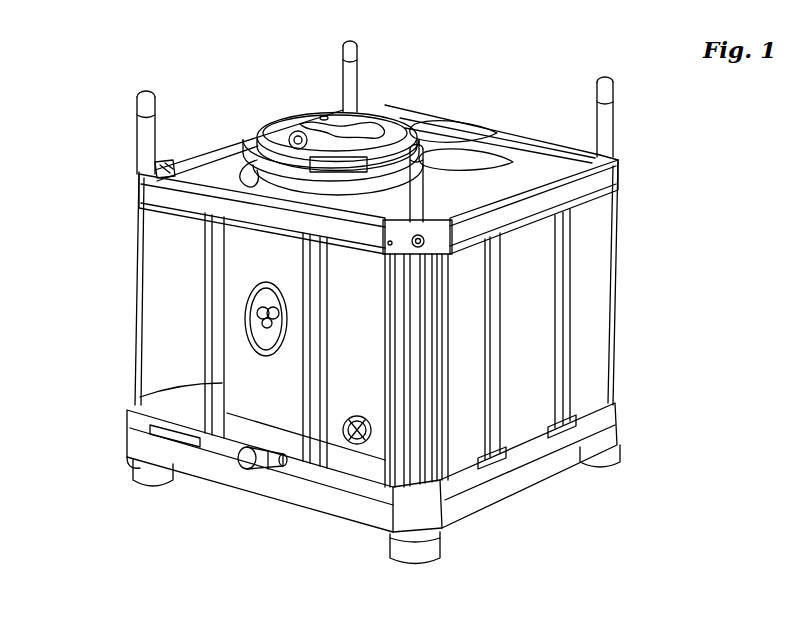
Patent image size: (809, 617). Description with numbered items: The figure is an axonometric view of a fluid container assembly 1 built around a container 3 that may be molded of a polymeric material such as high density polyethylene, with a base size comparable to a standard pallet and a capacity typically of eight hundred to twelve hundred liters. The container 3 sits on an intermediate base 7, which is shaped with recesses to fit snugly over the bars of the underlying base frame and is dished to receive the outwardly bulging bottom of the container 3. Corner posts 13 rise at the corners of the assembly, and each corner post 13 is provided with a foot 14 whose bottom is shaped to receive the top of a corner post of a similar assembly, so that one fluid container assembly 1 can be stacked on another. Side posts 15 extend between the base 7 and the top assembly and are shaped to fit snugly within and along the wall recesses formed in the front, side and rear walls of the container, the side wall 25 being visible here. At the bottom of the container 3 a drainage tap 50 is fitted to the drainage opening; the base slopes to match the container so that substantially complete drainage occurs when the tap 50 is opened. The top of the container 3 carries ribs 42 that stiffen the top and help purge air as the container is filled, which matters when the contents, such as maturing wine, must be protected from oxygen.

The fluid container assembly 1 is at (620, 268).
The container 3 is at (137, 305).
The intermediate base 7 is at (610, 418).
The corner post 13 is at (608, 130).
The foot 14 is at (430, 548).
The side post 15 is at (137, 390).
The side wall 25 is at (513, 422).
The rib 42 is at (430, 130).
The drainage tap 50 is at (222, 470).